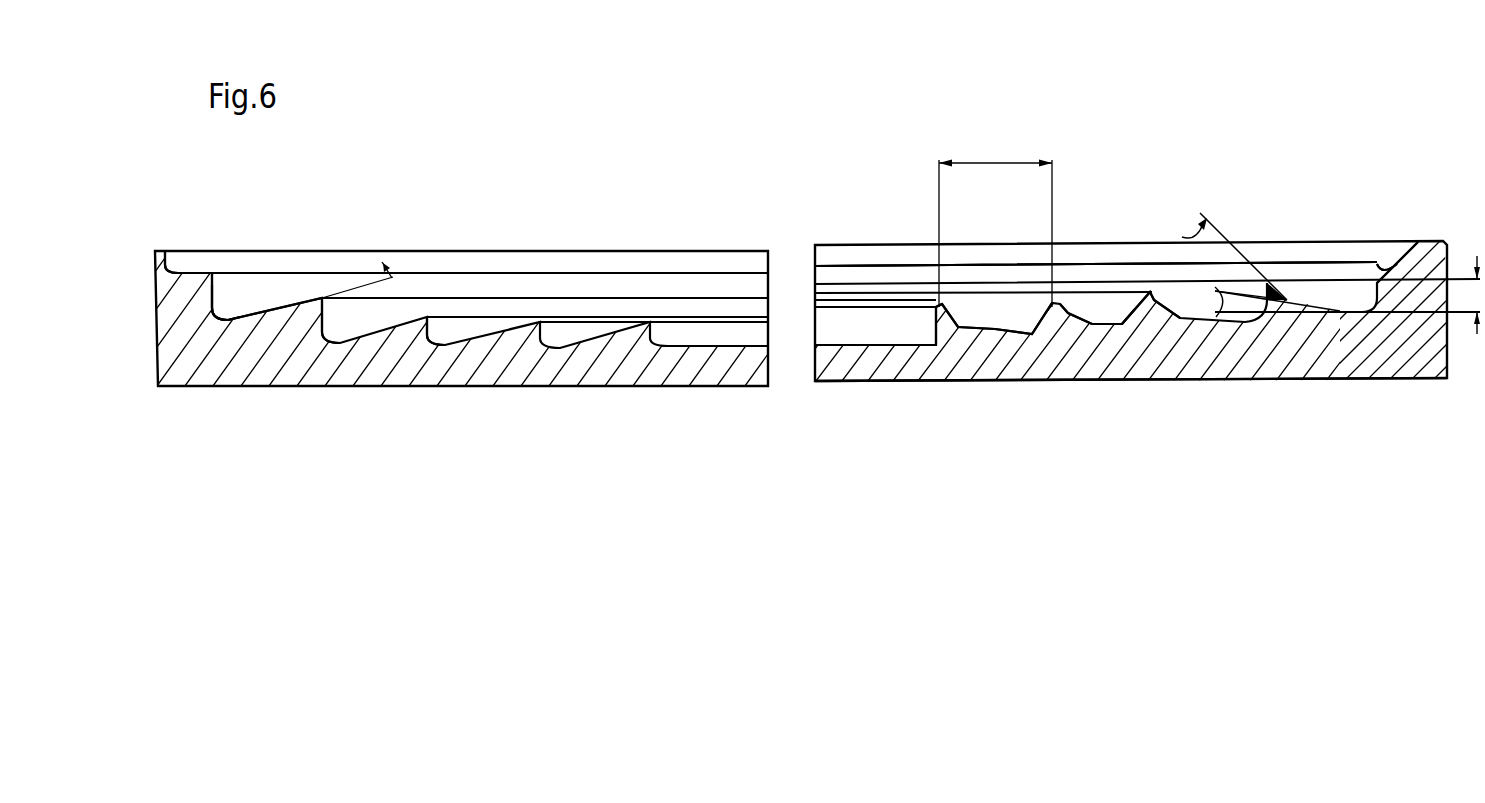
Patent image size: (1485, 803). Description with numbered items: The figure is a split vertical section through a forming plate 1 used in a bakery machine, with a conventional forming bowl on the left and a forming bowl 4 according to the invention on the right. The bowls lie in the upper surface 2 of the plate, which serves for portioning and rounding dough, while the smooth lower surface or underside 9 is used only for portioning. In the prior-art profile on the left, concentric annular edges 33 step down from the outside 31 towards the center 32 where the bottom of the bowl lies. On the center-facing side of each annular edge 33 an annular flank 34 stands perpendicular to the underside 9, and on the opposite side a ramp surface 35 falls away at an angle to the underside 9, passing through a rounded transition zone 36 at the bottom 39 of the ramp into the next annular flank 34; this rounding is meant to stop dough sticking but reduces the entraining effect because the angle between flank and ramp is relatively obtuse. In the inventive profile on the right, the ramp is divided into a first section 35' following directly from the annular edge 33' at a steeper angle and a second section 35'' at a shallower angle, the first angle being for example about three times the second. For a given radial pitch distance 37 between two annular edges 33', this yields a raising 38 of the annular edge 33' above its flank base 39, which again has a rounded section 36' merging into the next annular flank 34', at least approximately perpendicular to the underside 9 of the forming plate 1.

The forming plate 1 is at (1058, 360).
The upper surface 2 is at (1350, 240).
The forming bowl 4 is at (1086, 255).
The lower surface (underside) 9 is at (1255, 378).
The outside 31 is at (165, 253).
The center 32 is at (866, 341).
The annular edge 33 is at (218, 248).
The annular edge 33' is at (1151, 246).
The annular flank 34 is at (276, 317).
The annular flank 34' is at (935, 381).
The ramp surface 35 is at (623, 253).
The first section of ramp surface 35' is at (1087, 381).
The second section of ramp surface 35'' is at (1130, 383).
The transition zone 36 is at (227, 383).
The rounded section 36' is at (1020, 380).
The radial pitch distance 37 is at (993, 160).
The raising 38 is at (1473, 292).
The flank base (bottom of the ramp) 39 is at (1355, 312).